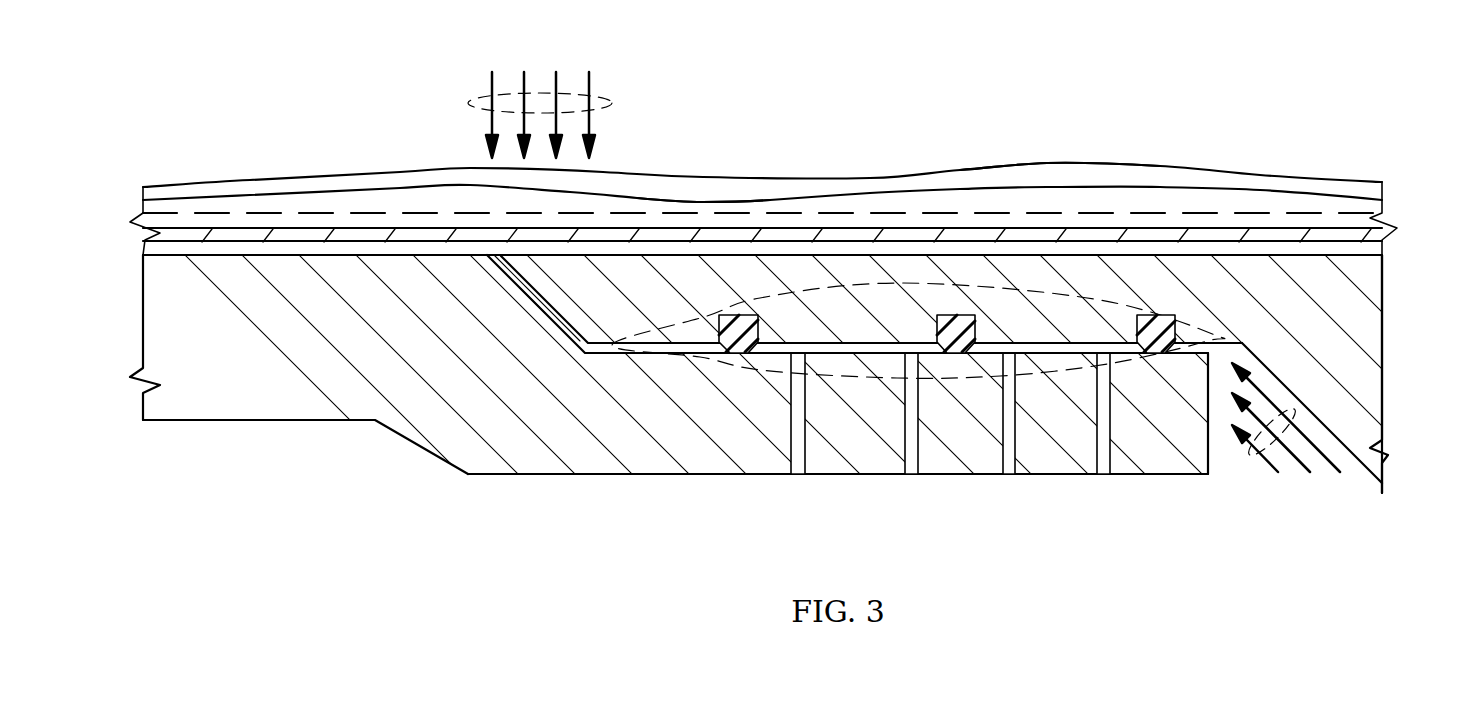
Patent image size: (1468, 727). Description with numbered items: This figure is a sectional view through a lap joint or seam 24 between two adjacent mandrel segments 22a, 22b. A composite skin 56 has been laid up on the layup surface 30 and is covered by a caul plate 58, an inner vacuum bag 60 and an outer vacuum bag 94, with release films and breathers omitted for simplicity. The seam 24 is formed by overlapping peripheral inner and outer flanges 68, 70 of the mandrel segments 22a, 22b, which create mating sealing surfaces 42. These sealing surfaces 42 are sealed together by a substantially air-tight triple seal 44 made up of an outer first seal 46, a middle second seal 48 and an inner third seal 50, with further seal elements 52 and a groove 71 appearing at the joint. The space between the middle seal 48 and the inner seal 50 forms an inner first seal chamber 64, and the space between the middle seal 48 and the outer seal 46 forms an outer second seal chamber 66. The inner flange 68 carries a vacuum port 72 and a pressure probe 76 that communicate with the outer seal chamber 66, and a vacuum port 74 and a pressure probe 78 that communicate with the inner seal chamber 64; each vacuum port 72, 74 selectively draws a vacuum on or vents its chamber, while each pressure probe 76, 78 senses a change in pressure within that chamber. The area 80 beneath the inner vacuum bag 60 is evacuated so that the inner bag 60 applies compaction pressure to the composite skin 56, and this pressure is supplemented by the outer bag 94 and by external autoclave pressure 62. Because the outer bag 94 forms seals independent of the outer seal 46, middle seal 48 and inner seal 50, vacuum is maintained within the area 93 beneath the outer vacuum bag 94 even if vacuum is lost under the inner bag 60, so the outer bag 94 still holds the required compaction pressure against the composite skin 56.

The mandrel segment 22a is at (257, 420).
The mandrel segment 22b is at (1383, 265).
The lap joint or seam 24 is at (852, 512).
The layup surface 30 is at (739, 184).
The sealing surfaces 42 is at (808, 263).
The triple seal 44 is at (884, 375).
The outer first seal 46 is at (740, 355).
The middle second seal 48 is at (942, 355).
The inner third seal 50 is at (1142, 355).
The locking features 52 is at (949, 363).
The composite skin 56 is at (230, 228).
The caul plate 58 is at (1308, 210).
The inner vacuum bag 60 is at (1180, 187).
The external autoclave pressure 62 is at (476, 105).
The inner first seal chamber 64 is at (1047, 343).
The outer second seal chamber 66 is at (821, 343).
The inner flange 68 is at (655, 465).
The outer flange 70 is at (920, 265).
The inclined groove 71 is at (528, 313).
The vacuum port 72 is at (800, 471).
The vacuum port 74 is at (1102, 471).
The pressure probe 76 is at (912, 471).
The pressure probe 78 is at (1025, 471).
The area beneath the inner vacuum bag 80 is at (488, 246).
The area beneath the outer vacuum bag 93 is at (703, 190).
The outer vacuum bag 94 is at (1055, 160).